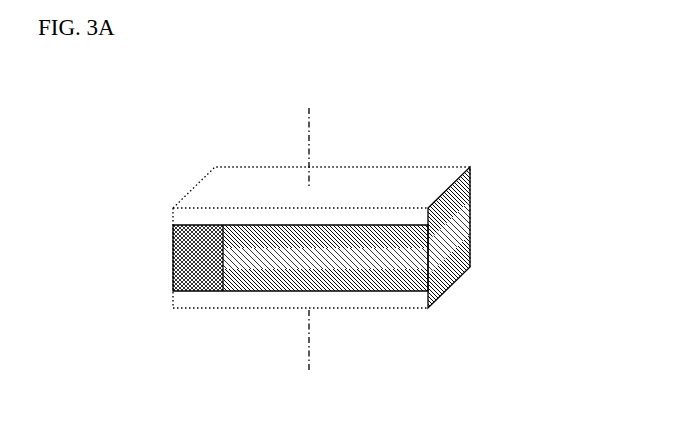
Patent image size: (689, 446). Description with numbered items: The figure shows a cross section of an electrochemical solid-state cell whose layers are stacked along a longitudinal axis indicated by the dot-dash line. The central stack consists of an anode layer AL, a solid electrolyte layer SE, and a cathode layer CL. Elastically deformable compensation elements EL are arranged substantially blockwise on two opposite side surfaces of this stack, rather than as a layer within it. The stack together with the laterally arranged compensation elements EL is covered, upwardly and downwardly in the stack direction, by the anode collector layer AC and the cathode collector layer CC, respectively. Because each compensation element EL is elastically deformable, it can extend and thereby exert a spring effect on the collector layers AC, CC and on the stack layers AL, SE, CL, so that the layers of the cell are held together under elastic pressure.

The anode layer AL is at (200, 227).
The compensation element EL is at (178, 262).
The solid electrolyte layer SE is at (180, 292).
The anode collector layer AC is at (471, 184).
The cathode collector layer CC is at (471, 263).
The cathode layer CL is at (404, 291).